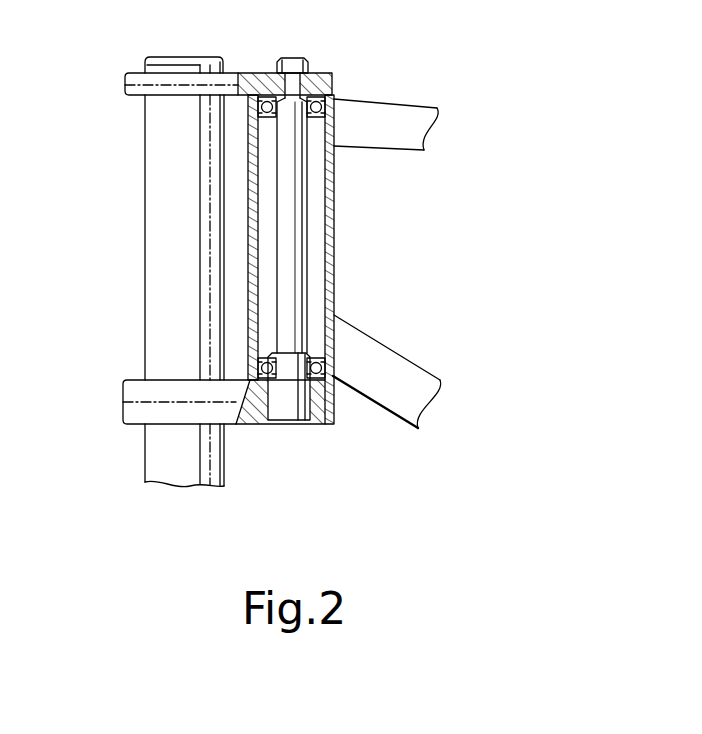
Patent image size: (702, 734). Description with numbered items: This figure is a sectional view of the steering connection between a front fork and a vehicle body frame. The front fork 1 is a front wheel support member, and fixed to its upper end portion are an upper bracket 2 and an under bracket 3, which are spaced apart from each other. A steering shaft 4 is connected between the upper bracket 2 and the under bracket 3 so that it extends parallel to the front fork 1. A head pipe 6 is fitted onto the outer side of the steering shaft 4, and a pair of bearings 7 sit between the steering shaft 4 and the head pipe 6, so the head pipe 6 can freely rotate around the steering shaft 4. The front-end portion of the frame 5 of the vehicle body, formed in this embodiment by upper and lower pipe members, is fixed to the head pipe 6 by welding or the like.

The front fork 1 is at (145, 193).
The upper bracket 2 is at (252, 73).
The under bracket 3 is at (257, 425).
The steering shaft 4 is at (300, 270).
The frame 5 is at (408, 112).
The head pipe 6 is at (335, 202).
The bearings 7 is at (343, 96).